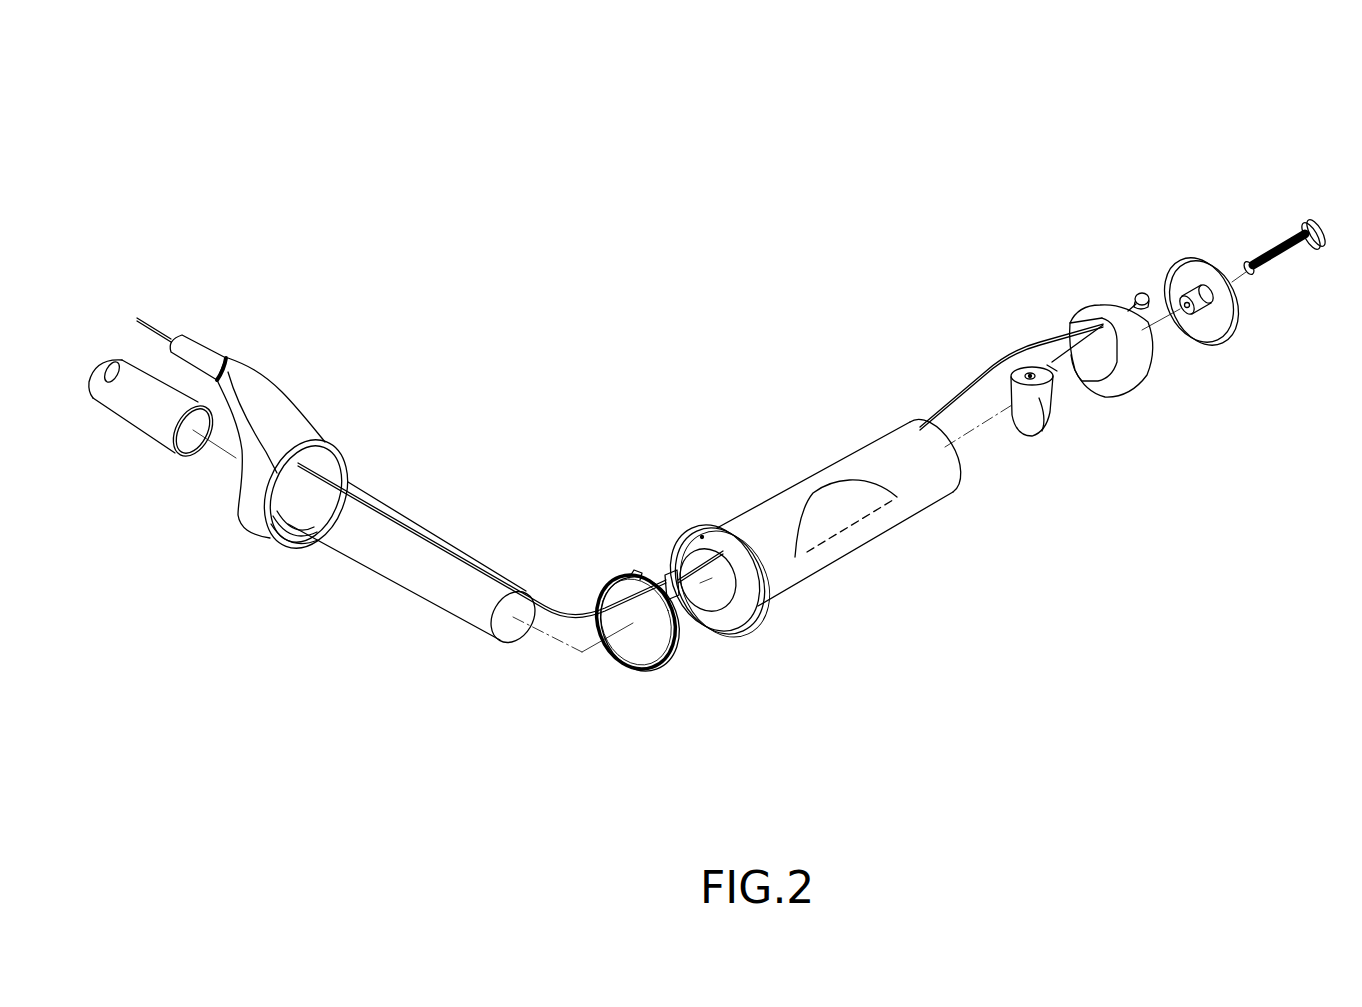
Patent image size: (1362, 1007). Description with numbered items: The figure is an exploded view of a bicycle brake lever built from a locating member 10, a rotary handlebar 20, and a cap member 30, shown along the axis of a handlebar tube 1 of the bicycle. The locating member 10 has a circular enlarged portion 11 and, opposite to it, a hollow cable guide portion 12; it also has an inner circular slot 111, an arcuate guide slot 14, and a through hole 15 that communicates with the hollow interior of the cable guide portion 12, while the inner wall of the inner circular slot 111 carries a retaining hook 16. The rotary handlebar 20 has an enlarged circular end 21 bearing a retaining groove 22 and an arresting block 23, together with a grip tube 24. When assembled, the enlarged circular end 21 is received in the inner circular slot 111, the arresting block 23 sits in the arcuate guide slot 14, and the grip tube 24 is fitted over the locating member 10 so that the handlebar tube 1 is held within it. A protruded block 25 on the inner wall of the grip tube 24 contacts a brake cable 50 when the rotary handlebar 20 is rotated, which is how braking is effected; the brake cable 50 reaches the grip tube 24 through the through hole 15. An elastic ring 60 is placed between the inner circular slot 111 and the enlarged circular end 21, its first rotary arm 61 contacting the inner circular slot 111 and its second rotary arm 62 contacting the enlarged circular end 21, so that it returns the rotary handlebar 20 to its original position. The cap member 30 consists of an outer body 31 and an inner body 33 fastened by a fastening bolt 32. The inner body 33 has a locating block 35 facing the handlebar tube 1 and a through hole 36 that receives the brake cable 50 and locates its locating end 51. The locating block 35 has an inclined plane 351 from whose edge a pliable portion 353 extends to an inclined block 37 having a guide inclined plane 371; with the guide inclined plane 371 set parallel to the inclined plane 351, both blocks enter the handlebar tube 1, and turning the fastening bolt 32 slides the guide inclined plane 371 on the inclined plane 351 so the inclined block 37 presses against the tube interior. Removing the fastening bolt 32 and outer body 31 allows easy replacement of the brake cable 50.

The handlebar tube 1 is at (138, 427).
The locating member 10 is at (368, 333).
The circular enlarged portion 11 is at (240, 523).
The cable guide portion 12 is at (258, 382).
The arcuate guide slot 14 is at (290, 543).
The through hole 15 is at (306, 458).
The retaining hook 16 is at (350, 470).
The inner circular slot 111 is at (333, 457).
The rotary handlebar 20 is at (778, 335).
The enlarged circular end 21 is at (717, 620).
The retaining groove 22 is at (757, 617).
The arresting block 23 is at (667, 576).
The grip tube 24 is at (902, 517).
The protruded block 25 is at (808, 503).
The cap member 30 is at (1075, 130).
The outer body 31 is at (1230, 330).
The fastening bolt 32 is at (1303, 252).
The inner body 33 is at (1160, 480).
The locating block 35 is at (1070, 333).
The through hole 36 is at (1102, 320).
The inclined block 37 is at (1017, 400).
The brake cable 50 is at (145, 320).
The locating end 51 is at (1140, 292).
The elastic ring 60 is at (657, 671).
The first rotary arm 61 is at (613, 573).
The second rotary arm 62 is at (635, 569).
The inclined plane 351 is at (1071, 378).
The pliable portion 353 is at (1050, 363).
The guide inclined plane 371 is at (1043, 431).